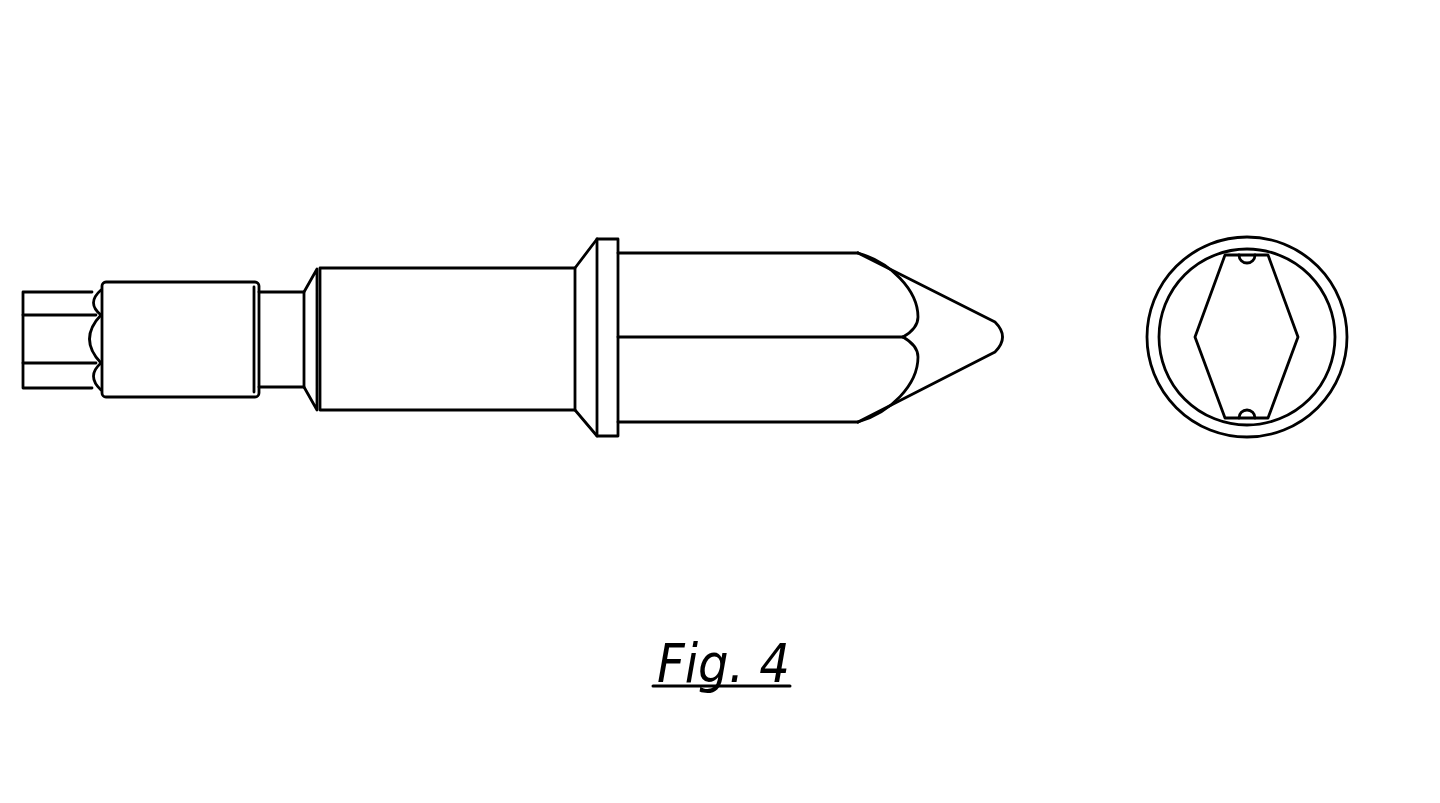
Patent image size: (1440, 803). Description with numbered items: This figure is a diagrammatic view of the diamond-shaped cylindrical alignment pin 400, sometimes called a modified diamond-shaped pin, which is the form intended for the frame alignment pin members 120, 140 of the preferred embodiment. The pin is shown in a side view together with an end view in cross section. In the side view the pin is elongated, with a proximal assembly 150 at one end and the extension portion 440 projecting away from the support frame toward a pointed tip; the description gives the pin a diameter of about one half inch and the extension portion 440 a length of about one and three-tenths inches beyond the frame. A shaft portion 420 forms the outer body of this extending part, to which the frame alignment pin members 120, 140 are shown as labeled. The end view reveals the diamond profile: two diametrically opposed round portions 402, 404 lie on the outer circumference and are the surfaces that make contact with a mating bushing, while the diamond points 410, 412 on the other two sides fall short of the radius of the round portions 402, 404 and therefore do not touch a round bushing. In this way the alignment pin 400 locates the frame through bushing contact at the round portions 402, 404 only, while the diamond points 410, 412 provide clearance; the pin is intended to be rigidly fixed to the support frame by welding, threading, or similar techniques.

The proximal hub assembly 150 is at (620, 213).
The alignment pin 400 is at (380, 445).
The extension portion 440 is at (933, 85).
The frame alignment pin member 120 is at (810, 259).
The frame alignment pin member 140 is at (783, 253).
The outer shaft 420 is at (715, 423).
The round portion 402 is at (1258, 254).
The round portion 404 is at (1240, 424).
The diamond point 410 is at (1308, 335).
The diamond point 412 is at (1188, 341).